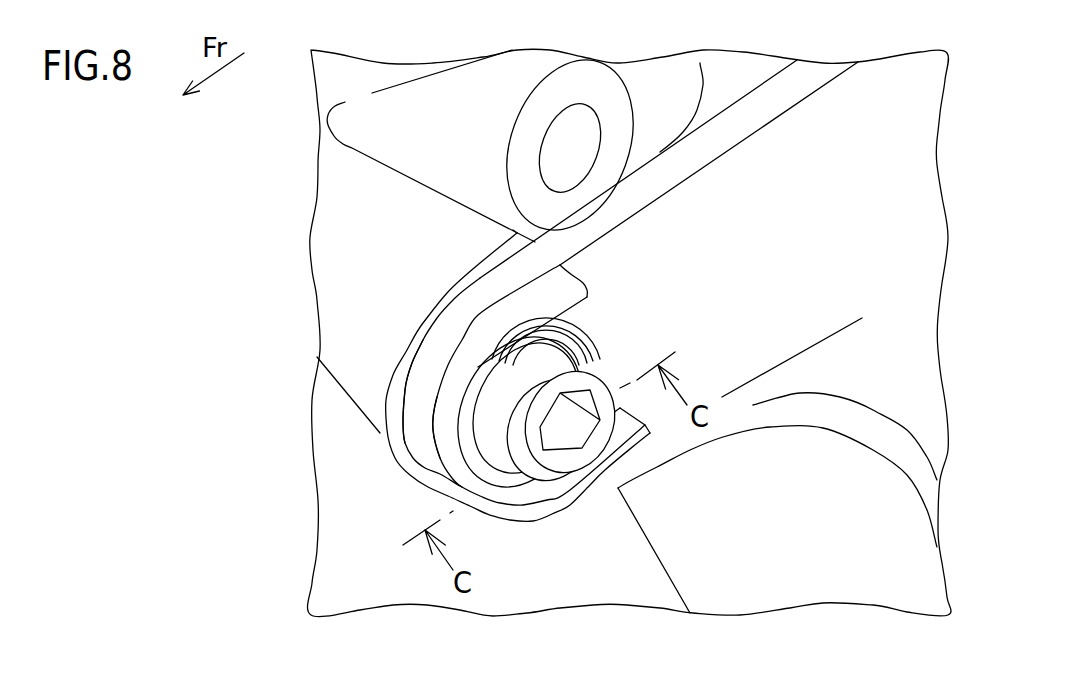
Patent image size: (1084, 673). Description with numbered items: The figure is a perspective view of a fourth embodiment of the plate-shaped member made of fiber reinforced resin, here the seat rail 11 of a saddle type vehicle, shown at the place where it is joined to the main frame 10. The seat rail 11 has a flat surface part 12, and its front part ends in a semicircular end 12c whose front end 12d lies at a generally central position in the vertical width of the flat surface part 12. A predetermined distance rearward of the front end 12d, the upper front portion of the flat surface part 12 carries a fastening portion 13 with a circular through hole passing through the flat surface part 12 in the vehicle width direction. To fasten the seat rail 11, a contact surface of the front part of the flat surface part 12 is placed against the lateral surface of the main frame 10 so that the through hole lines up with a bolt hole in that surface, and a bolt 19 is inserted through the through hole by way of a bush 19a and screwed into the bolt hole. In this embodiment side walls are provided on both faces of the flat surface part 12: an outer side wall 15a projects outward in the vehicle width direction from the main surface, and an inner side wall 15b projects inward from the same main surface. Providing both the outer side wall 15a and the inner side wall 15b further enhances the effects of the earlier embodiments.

The main frame 10 is at (357, 498).
The seat rail 11 is at (760, 73).
The flat surface part 12 is at (768, 283).
The semicircular end 12c is at (423, 383).
The front end 12d is at (420, 463).
The fastening portion 13 is at (500, 488).
The outer side wall 15a is at (490, 337).
The inner side wall 15b is at (473, 270).
The bolt 19 is at (583, 472).
The bush 19a is at (470, 495).